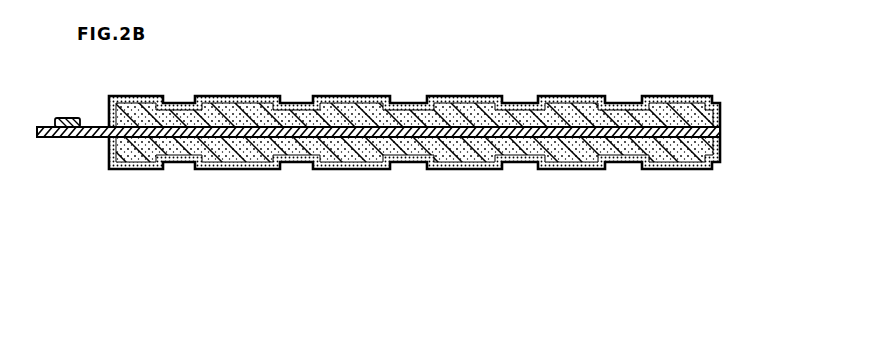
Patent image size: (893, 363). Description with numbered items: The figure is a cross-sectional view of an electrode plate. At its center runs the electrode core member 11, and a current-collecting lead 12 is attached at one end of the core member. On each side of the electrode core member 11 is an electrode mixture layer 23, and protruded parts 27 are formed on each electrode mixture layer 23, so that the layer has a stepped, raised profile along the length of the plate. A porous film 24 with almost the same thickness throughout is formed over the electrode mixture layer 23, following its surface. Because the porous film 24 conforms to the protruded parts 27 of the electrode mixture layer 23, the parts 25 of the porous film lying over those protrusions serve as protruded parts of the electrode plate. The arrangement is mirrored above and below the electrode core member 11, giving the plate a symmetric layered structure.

The electrode core member 11 is at (48, 138).
The current-collecting lead 12 is at (63, 117).
The electrode mixture layer 23 is at (720, 112).
The porous film 24 is at (405, 103).
The protruded parts of the porous film 25 is at (135, 96).
The protruded parts of the electrode mixture layer 27 is at (232, 96).